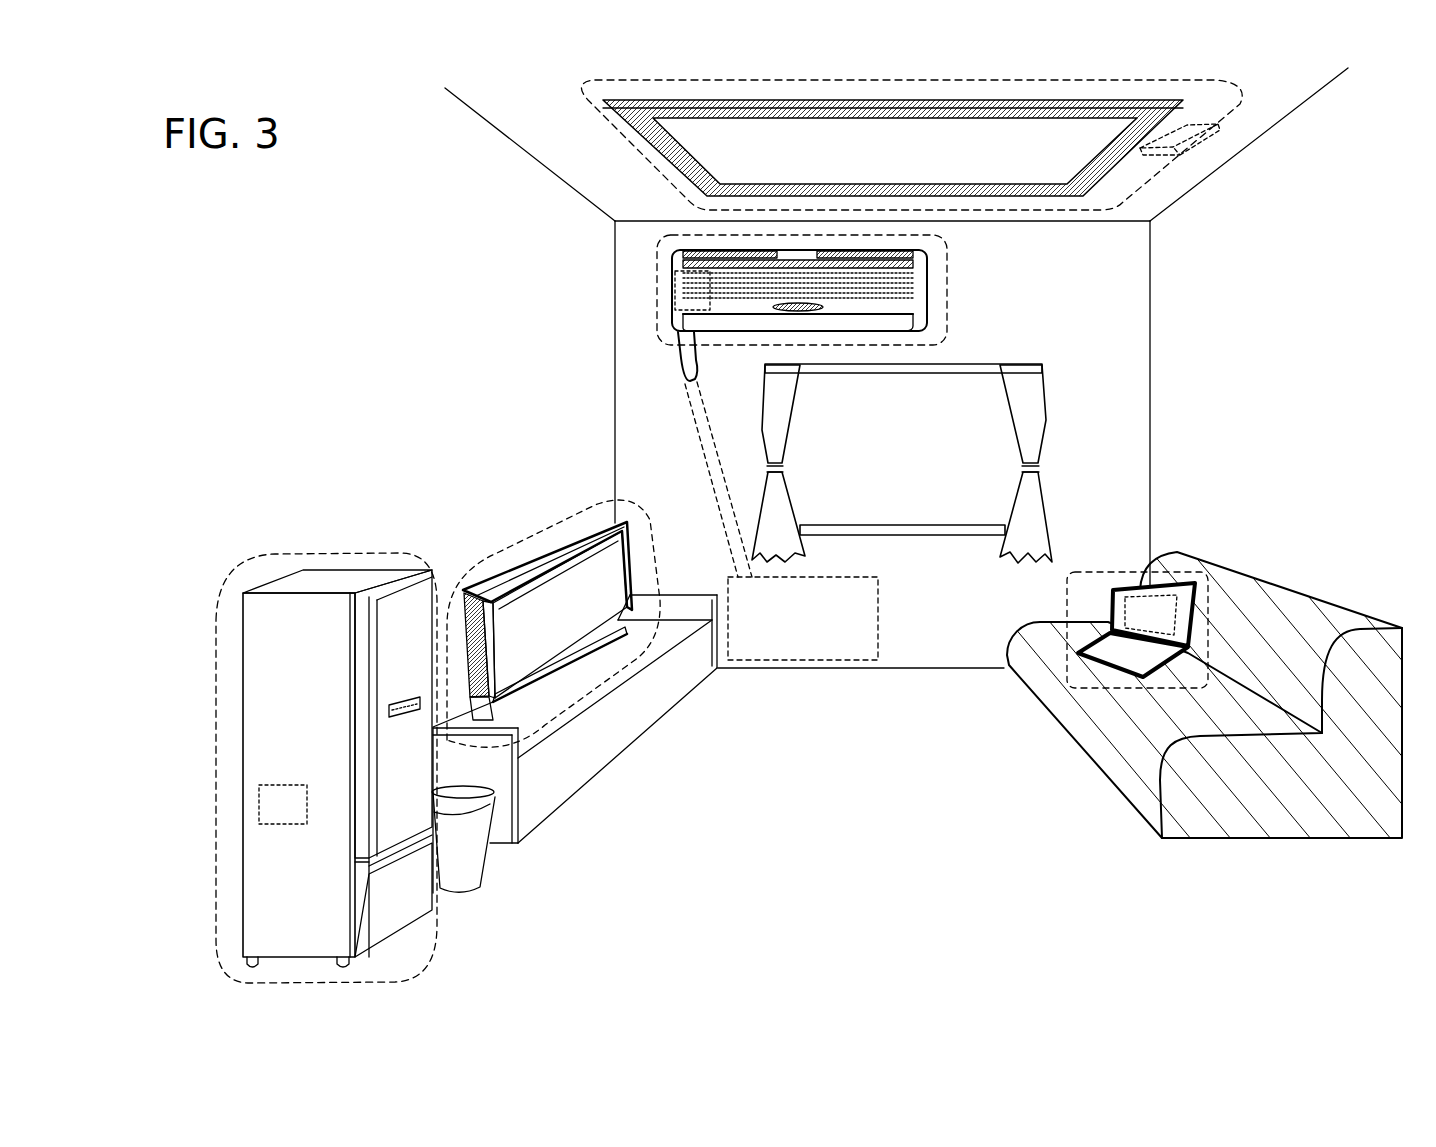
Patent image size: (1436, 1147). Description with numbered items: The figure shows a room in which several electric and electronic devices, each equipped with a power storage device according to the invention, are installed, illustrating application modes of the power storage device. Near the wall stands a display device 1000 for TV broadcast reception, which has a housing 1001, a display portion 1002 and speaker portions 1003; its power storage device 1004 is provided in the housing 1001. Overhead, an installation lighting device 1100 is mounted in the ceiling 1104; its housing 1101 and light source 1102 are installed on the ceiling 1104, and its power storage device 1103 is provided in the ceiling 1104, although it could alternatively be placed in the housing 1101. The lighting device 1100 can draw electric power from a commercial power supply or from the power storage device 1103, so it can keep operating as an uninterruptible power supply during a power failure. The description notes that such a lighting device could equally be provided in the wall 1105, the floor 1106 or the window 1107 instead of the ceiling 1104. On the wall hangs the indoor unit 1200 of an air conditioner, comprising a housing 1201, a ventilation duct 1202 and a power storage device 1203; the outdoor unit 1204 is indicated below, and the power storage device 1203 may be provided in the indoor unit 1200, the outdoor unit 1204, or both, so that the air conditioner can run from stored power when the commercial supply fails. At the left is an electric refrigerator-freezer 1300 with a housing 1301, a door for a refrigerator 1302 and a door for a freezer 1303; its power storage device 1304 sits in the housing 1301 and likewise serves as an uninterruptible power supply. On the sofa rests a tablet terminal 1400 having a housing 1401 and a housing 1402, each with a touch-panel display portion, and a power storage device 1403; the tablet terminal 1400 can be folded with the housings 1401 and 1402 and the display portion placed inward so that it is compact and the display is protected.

The display device 1000 is at (540, 661).
The housing 1001 is at (557, 547).
The display portion 1002 is at (567, 547).
The speaker portions 1003 is at (466, 632).
The power storage device 1004 is at (466, 592).
The installation lighting device 1100 is at (828, 152).
The housing 1101 is at (657, 146).
The light source 1102 is at (742, 174).
The power storage device 1103 is at (1197, 138).
The ceiling 1104 is at (555, 118).
The wall 1105 is at (1235, 254).
The floor 1106 is at (955, 724).
The window 1107 is at (985, 509).
The indoor unit 1200 is at (726, 406).
The housing 1201 is at (675, 281).
The ventilation duct 1202 is at (693, 325).
The power storage device 1203 is at (677, 306).
The outdoor unit 1204 is at (793, 613).
The electric refrigerator-freezer 1300 is at (267, 768).
The housing 1301 is at (257, 683).
The door for a refrigerator 1302 is at (400, 765).
The door for a freezer 1303 is at (400, 904).
The power storage device 1304 is at (259, 801).
The tablet terminal 1400 is at (1132, 674).
The housing 1401 is at (1155, 563).
The housing 1402 is at (1093, 590).
The power storage device 1403 is at (1137, 587).